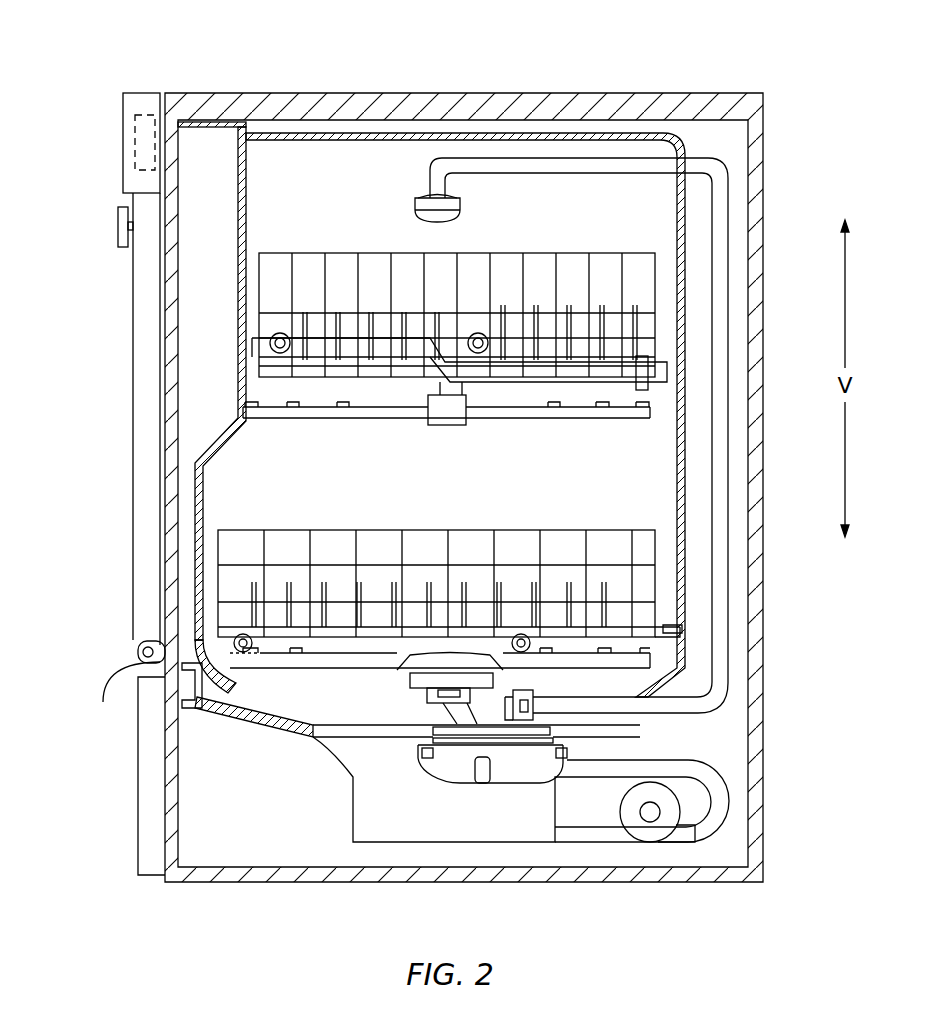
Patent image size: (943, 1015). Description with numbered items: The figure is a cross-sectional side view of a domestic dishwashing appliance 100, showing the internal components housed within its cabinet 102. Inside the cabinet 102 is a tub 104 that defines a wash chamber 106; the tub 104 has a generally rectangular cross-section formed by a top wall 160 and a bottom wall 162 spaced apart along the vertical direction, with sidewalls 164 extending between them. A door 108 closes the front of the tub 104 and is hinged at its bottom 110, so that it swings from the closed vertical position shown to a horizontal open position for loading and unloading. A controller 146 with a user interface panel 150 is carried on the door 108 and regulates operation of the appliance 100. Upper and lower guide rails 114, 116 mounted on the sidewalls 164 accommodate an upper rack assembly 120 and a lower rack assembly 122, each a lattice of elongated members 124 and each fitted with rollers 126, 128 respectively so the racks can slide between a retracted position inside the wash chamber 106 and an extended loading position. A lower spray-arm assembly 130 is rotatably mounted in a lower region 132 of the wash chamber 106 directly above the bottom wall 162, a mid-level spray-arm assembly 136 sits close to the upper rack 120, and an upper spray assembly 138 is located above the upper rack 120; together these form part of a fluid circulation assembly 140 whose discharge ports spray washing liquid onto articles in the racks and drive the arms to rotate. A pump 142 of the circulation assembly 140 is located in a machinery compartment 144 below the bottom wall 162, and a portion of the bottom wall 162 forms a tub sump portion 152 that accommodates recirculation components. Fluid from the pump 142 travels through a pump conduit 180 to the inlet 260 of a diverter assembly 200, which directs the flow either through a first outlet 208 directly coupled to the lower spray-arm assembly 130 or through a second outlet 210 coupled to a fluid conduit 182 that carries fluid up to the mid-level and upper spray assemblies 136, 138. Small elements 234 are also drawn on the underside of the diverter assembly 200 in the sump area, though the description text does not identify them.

The dishwashing appliance 100 is at (608, 84).
The cabinet 102 is at (762, 150).
The tub 104 is at (292, 499).
The wash chamber 106 is at (212, 446).
The door 108 is at (125, 545).
The bottom of the door 110 is at (160, 663).
The upper guide rail 114 is at (256, 343).
The lower guide rail 116 is at (232, 672).
The upper rack assembly 120 is at (308, 250).
The lower rack assembly 122 is at (520, 531).
The elongated members 124 is at (367, 530).
The rollers 126 is at (270, 355).
The rollers 128 is at (513, 638).
The lower spray-arm assembly 130 is at (262, 665).
The lower region of the wash chamber 132 is at (657, 648).
The mid-level spray-arm assembly 136 is at (487, 407).
The upper spray assembly 138 is at (460, 218).
The fluid circulation assembly 140 is at (736, 471).
The pump 142 is at (670, 833).
The machinery compartment 144 is at (303, 856).
The controller 146 is at (131, 140).
The user interface panel 150 is at (120, 228).
The tub sump portion 152 is at (387, 742).
The top wall 160 is at (505, 132).
The bottom wall 162 is at (265, 740).
The sidewalls 164 is at (336, 162).
The pump conduit 180 is at (722, 793).
The fluid conduit 182 is at (728, 703).
The diverter assembly 200 is at (457, 788).
The first outlet 208 is at (455, 717).
The second outlet 210 is at (527, 720).
The mounting flanges 234 is at (426, 760).
The inlet 260 is at (484, 777).